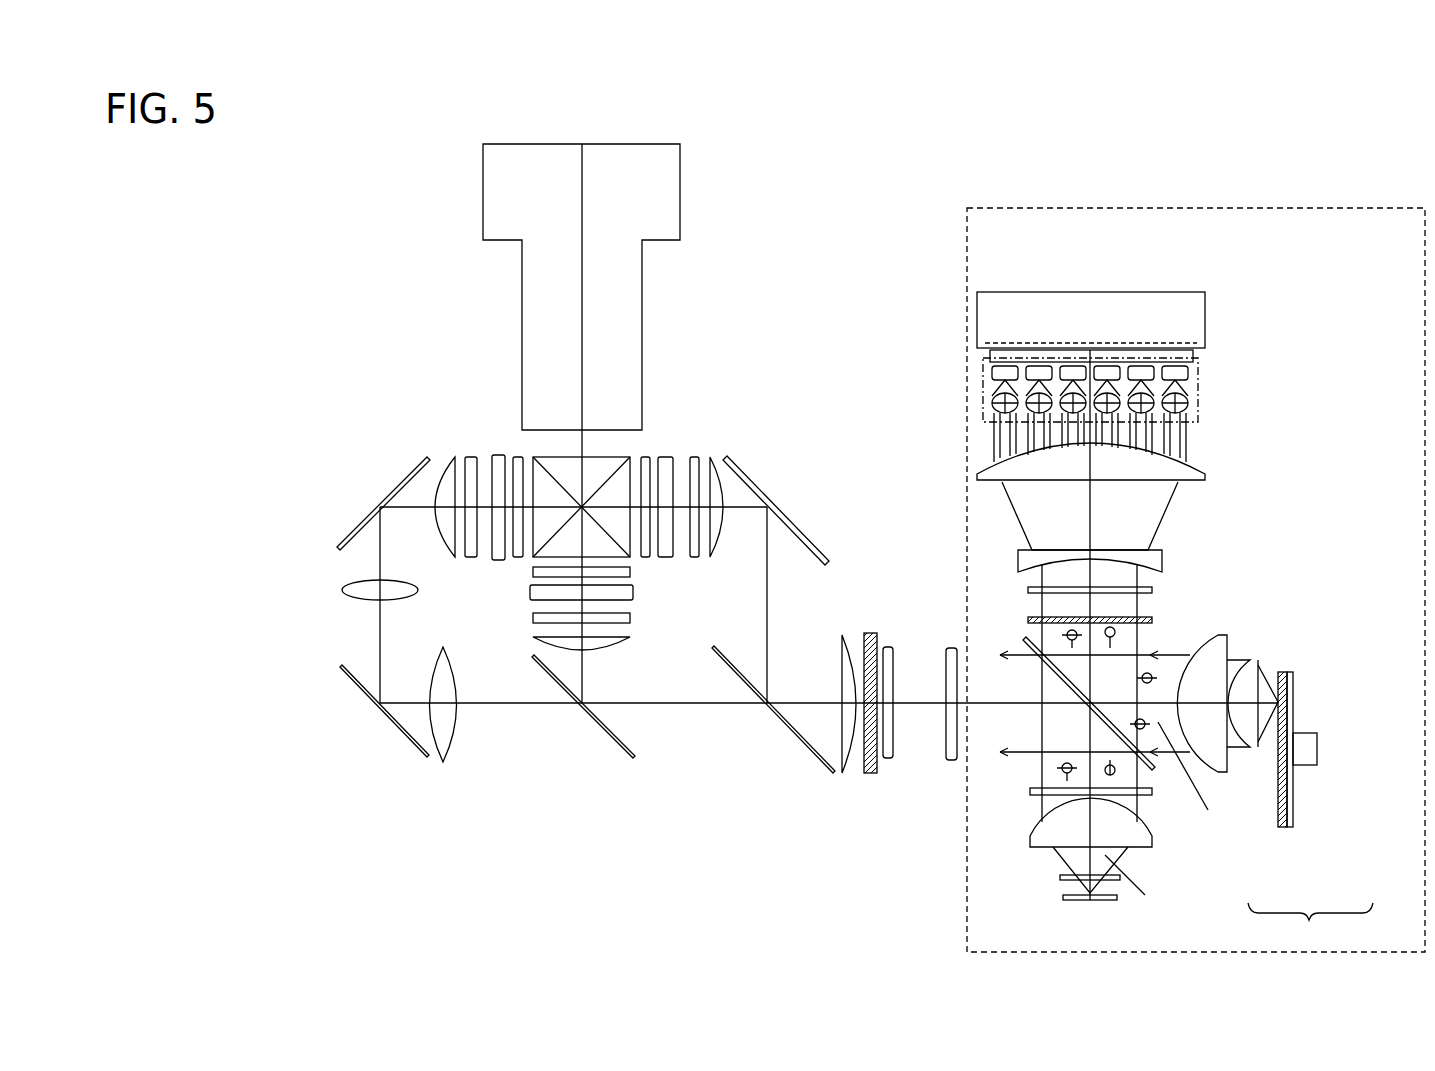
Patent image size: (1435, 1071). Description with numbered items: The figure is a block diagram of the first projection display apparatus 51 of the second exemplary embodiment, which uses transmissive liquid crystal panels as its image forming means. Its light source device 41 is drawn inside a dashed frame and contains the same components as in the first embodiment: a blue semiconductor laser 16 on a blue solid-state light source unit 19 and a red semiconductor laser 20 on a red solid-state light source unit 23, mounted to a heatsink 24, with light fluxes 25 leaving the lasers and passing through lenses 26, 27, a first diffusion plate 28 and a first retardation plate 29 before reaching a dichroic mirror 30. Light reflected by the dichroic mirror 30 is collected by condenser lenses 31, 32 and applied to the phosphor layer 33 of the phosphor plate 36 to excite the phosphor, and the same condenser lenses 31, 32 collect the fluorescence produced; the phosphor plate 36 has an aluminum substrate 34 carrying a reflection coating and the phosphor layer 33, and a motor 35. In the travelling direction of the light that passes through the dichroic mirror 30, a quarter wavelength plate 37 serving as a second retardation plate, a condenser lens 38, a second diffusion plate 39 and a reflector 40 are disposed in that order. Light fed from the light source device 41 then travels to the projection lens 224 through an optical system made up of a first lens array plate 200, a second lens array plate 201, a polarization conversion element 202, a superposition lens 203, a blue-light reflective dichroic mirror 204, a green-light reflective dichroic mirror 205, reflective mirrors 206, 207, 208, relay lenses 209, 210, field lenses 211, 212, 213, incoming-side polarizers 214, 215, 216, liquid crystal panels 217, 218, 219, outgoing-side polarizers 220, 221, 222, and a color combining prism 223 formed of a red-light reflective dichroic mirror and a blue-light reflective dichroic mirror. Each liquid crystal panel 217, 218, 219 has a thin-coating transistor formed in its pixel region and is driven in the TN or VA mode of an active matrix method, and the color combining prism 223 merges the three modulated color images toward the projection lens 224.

The first projection display apparatus 51 is at (395, 157).
The projection lens 224 is at (521, 263).
The reflective mirror 208 is at (368, 508).
The field lens 213 is at (450, 455).
The incoming-side polarizer 216 is at (468, 455).
The liquid crystal panel 219 is at (493, 453).
The outgoing-side polarizer 222 is at (519, 455).
The color combining prism 223 is at (623, 456).
The outgoing-side polarizer 221 is at (645, 557).
The liquid crystal panel 218 is at (670, 456).
The incoming-side polarizer 215 is at (694, 456).
The field lens 212 is at (714, 557).
The reflective mirror 206 is at (752, 484).
The outgoing-side polarizer 220 is at (533, 572).
The liquid crystal panel 217 is at (532, 590).
The incoming-side polarizer 214 is at (533, 618).
The field lens 211 is at (533, 640).
The relay lens 210 is at (343, 594).
The reflective mirror 207 is at (373, 705).
The relay lens 209 is at (442, 762).
The green-light reflective dichroic mirror 205 is at (590, 717).
The blue-light reflective dichroic mirror 204 is at (775, 717).
The superposition lens 203 is at (845, 770).
The polarization conversion element 202 is at (870, 773).
The second lens array plate 201 is at (888, 758).
The first lens array plate 200 is at (950, 760).
The light source device 41 is at (1322, 208).
The heatsink 24 is at (1205, 310).
The red solid-state light source unit 23 is at (1072, 343).
The blue solid-state light source unit 19 is at (1119, 327).
The red semiconductor laser 20 is at (1082, 372).
The blue semiconductor laser 16 is at (1150, 372).
The light fluxes 25 is at (1000, 438).
The lens 26 is at (980, 479).
The lens 27 is at (1162, 559).
The first diffusion plate 28 is at (1152, 590).
The first retardation plate 29 is at (1152, 620).
The dichroic mirror 30 is at (1023, 640).
The condenser lens 31 is at (1222, 638).
The condenser lens 32 is at (1258, 663).
The phosphor layer 33 is at (1282, 824).
The aluminum substrate 34 is at (1290, 824).
The motor 35 is at (1310, 753).
The phosphor plate 36 is at (1310, 926).
The quarter wavelength plate 37 is at (1030, 790).
The condenser lens 38 is at (1030, 838).
The second diffusion plate 39 is at (1060, 877).
The reflector 40 is at (1063, 897).